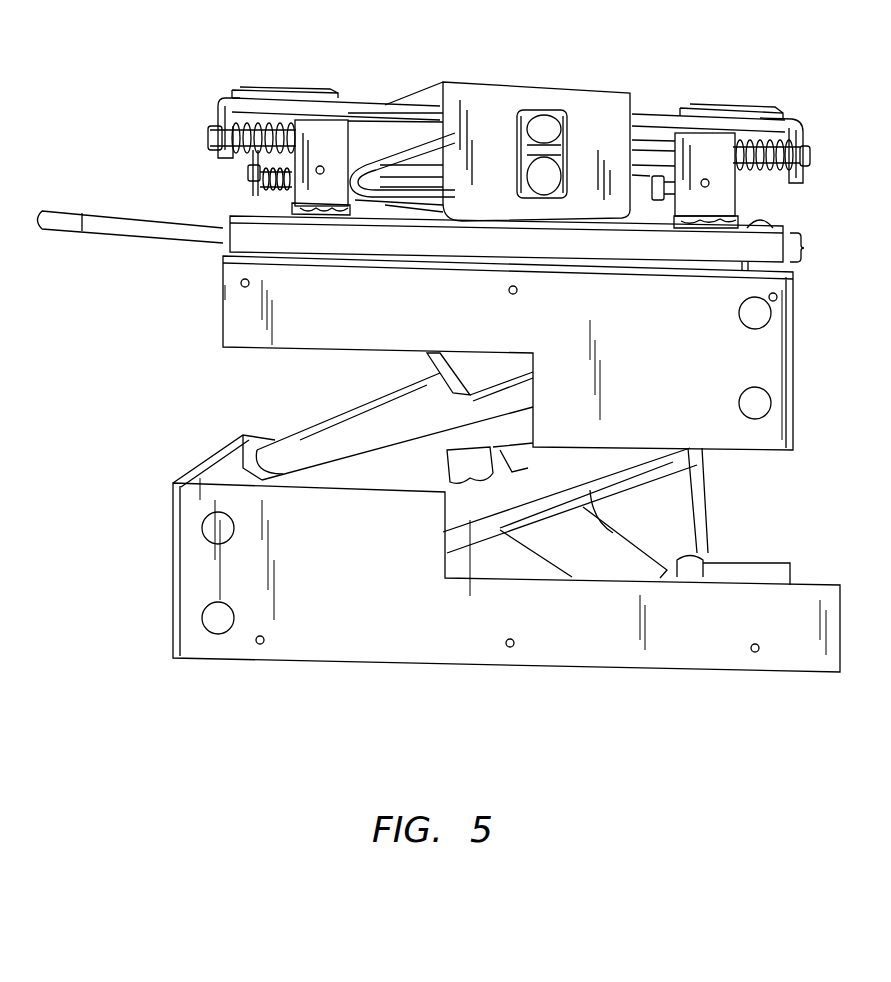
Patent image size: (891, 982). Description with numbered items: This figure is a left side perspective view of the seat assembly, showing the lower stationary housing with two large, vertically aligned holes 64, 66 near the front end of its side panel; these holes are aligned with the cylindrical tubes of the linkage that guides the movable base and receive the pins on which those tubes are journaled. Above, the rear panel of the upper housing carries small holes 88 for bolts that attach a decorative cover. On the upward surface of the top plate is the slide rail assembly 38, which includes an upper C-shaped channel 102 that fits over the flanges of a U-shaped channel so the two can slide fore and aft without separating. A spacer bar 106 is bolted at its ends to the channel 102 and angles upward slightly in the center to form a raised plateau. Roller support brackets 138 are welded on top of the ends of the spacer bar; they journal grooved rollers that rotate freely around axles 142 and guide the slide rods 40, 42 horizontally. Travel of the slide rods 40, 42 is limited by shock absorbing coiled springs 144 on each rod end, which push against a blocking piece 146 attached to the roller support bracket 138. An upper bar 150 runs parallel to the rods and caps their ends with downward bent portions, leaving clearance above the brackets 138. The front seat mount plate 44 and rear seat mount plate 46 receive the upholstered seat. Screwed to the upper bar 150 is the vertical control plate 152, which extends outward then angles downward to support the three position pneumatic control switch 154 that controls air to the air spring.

The slide rail assembly 38 is at (554, 209).
The slide rod 40 is at (413, 177).
The slide rod 42 is at (357, 137).
The front seat mount plate 44 is at (297, 90).
The rear seat mount plate 46 is at (730, 107).
The hole 64 is at (202, 528).
The hole 66 is at (202, 617).
The small hole 88 is at (243, 287).
The upper C-shaped channel 102 is at (783, 250).
The spacer bar 106 is at (783, 227).
The roller support bracket 138 is at (305, 192).
The axle 142 is at (260, 177).
The shock absorbing coiled spring 144 is at (257, 158).
The blocking piece 146 is at (290, 118).
The upper bar 150 is at (658, 116).
The vertical control plate 152 is at (487, 100).
The three position pneumatic control switch 154 is at (557, 118).